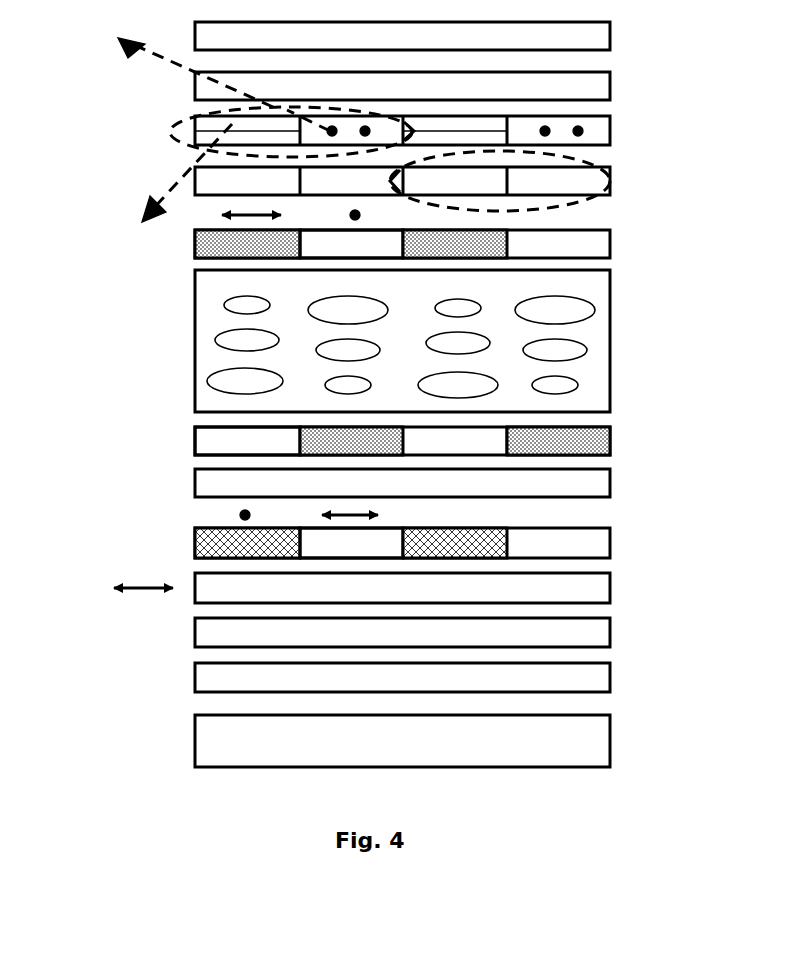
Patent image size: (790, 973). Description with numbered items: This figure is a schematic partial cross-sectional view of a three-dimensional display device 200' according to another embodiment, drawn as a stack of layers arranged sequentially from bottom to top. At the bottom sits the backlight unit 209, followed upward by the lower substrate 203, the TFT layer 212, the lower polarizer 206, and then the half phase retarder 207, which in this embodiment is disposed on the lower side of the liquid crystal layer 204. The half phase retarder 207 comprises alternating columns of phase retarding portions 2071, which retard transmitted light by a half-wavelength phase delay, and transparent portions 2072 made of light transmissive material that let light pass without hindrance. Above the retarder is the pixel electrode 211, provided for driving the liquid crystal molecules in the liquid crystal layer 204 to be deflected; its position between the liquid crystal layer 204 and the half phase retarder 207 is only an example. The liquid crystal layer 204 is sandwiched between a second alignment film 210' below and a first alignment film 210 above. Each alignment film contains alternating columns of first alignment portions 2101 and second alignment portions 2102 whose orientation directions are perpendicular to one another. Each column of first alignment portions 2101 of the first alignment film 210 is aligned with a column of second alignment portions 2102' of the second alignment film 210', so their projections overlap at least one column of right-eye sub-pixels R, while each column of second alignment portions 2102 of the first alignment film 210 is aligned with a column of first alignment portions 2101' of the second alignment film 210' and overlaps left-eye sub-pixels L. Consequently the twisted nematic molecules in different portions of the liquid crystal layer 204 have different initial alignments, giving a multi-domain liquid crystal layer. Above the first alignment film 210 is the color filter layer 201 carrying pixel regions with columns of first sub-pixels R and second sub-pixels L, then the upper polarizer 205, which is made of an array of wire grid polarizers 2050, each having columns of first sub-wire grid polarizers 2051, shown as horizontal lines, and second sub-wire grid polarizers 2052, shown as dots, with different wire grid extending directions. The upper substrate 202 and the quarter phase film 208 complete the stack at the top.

The 3D display device 200' is at (373, 394).
The ¼ phase film 208 is at (428, 37).
The upper substrate 202 is at (428, 87).
The upper polarizer 205 is at (428, 131).
The wire grid polarizer 2050 is at (262, 132).
The first sub-wire grid polarizer 2051 is at (163, 182).
The second sub-wire grid polarizer 2052 is at (198, 79).
The color filter layer 201 is at (615, 165).
The first alignment film 210 is at (428, 245).
The first alignment portion 2101 is at (247, 244).
The second alignment portion 2102 is at (351, 244).
The liquid crystal layer 204 is at (428, 341).
The second alignment film 210' is at (431, 442).
The second alignment portion of the second alignment film 2102' is at (247, 441).
The first alignment portion of the second alignment film 2101' is at (351, 441).
The pixel electrode 211 is at (428, 484).
The ½ phase retarder 207 is at (428, 543).
The phase retarding portion 2071 is at (247, 543).
The transparent portion 2072 is at (351, 543).
The lower polarizer 206 is at (388, 588).
The TFT layer 212 is at (428, 633).
The lower substrate 203 is at (428, 678).
The backlight unit 209 is at (428, 741).